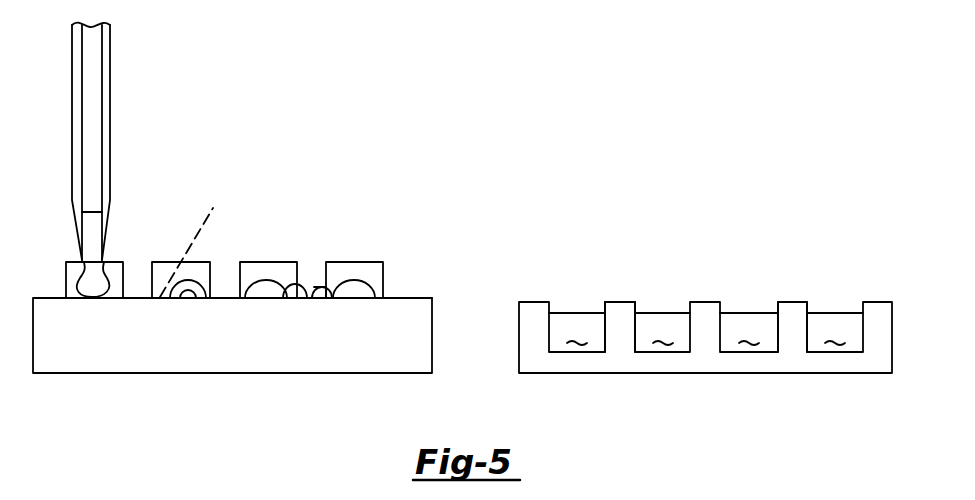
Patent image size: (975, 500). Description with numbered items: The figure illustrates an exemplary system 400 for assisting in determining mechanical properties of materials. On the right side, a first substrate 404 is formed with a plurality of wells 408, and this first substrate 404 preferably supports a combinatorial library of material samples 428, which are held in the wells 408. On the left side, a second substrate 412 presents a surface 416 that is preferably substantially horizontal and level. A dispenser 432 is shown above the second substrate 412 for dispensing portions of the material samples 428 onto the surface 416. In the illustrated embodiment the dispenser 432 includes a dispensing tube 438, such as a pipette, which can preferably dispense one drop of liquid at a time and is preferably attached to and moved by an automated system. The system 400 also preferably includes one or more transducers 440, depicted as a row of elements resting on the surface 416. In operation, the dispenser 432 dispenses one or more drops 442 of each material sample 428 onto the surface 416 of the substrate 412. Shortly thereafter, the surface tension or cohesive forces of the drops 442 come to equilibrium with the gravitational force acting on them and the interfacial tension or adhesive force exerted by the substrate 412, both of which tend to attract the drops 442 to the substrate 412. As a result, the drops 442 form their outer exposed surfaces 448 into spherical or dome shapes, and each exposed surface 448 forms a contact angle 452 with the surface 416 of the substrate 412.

The system 400 is at (705, 253).
The first substrate 404 is at (605, 362).
The wells 408 is at (648, 311).
The second substrate 412 is at (92, 342).
The surface 416 is at (404, 298).
The material samples 428 is at (706, 329).
The dispenser 432 is at (133, 101).
The dispensing tube 438 is at (110, 150).
The transducers 440 is at (163, 262).
The drops 442 is at (349, 290).
The exposed surfaces 448 is at (306, 298).
The contact angle 452 is at (191, 292).